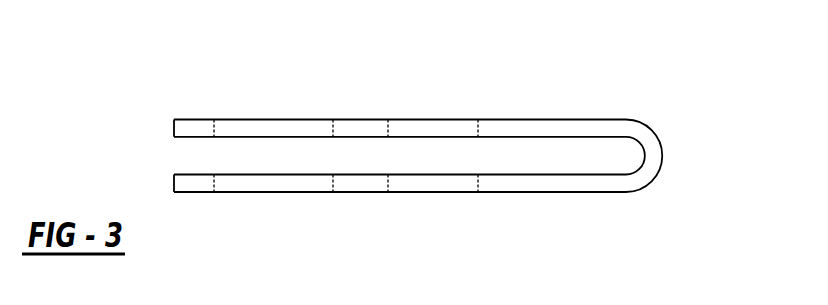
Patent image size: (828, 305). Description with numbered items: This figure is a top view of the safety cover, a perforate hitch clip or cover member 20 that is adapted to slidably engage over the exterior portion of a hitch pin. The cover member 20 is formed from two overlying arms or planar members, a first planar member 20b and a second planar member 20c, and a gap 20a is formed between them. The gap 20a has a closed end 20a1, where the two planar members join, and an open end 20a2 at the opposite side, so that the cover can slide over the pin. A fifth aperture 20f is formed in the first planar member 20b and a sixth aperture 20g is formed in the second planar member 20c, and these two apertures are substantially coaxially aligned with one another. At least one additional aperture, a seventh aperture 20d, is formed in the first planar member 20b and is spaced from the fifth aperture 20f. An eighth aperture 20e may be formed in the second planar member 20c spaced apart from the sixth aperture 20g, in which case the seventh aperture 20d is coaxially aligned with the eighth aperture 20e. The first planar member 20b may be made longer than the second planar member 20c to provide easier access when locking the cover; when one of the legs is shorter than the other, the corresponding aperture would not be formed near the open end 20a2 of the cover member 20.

The cover member 20 is at (385, 151).
The gap 20a is at (660, 169).
The closed end 20a1 is at (659, 137).
The open end 20a2 is at (186, 153).
The first planar member 20b is at (560, 192).
The second planar member 20c is at (400, 75).
The seventh aperture 20d is at (400, 233).
The eighth aperture 20e is at (277, 119).
The fifth aperture 20f is at (447, 193).
The sixth aperture 20g is at (440, 119).